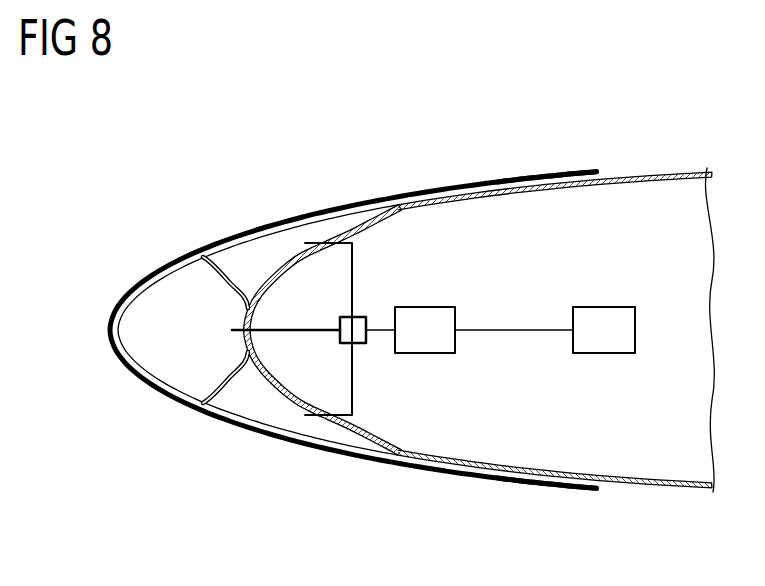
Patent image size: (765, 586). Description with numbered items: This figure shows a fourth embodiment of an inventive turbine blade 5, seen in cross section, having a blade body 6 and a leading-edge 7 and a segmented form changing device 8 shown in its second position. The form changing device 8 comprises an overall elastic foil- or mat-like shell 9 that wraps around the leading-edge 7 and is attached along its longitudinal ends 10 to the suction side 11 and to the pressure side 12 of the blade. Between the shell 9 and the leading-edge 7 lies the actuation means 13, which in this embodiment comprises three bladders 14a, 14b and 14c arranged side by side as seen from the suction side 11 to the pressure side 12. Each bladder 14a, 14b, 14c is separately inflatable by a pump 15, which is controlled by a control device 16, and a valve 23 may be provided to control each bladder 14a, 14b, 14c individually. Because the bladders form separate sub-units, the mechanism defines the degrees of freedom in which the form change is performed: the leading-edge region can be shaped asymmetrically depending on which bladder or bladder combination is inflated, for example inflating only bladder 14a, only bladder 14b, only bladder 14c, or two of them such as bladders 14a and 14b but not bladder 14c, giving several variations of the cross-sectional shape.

The turbine blade 5 is at (333, 478).
The blade body 6 is at (660, 496).
The leading-edge 7 is at (262, 328).
The form changing device 8 is at (144, 408).
The shell 9 is at (118, 302).
The longitudinal ends 10 is at (515, 178).
The suction side 11 is at (615, 166).
The pressure side 12 is at (608, 489).
The actuation means 13 is at (375, 380).
The bladder 14a is at (251, 255).
The bladder 14b is at (137, 342).
The bladder 14c is at (250, 405).
The pump 15 is at (437, 307).
The control device 16 is at (612, 307).
The valve 23 is at (362, 318).